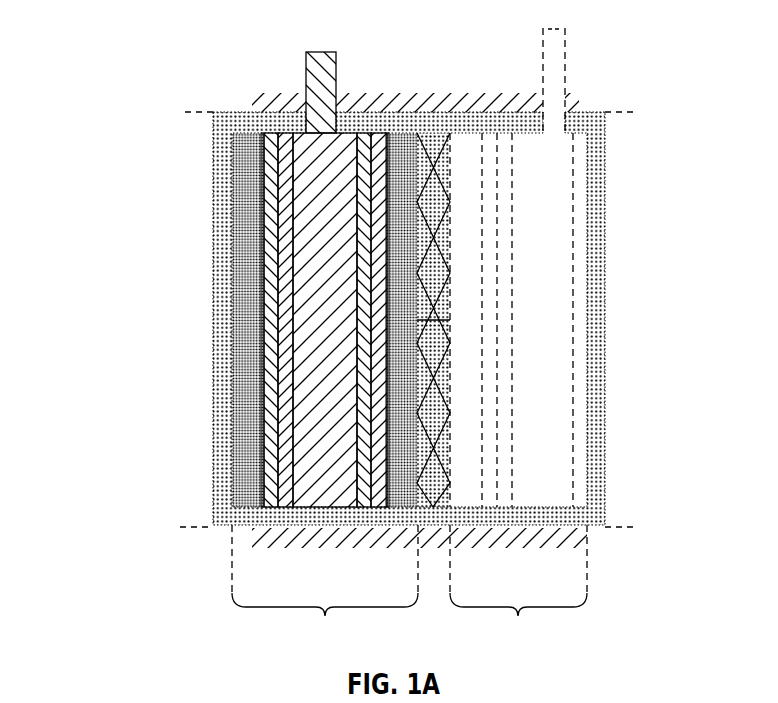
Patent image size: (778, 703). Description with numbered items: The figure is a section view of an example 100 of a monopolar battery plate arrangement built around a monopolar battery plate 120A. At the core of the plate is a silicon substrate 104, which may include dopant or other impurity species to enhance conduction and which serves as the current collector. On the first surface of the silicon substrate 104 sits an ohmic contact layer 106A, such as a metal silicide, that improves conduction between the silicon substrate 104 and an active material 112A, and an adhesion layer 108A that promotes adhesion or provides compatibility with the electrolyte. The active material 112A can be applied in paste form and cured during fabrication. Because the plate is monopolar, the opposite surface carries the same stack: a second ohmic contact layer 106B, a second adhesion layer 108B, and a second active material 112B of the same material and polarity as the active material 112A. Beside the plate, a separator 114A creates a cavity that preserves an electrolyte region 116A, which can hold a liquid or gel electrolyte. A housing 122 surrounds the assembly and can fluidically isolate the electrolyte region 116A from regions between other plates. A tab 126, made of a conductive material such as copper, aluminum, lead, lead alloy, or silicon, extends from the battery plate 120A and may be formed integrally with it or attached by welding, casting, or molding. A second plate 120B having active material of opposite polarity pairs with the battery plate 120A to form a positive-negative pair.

The example 100 is at (356, 328).
The silicon substrate 104 is at (315, 282).
The ohmic contact layer 106A is at (363, 220).
The second ohmic contact layer 106B is at (290, 332).
The adhesion layer 108A is at (387, 150).
The second adhesion layer 108B is at (268, 397).
The active material 112A is at (404, 142).
The second active material 112B is at (253, 476).
The separator 114A is at (447, 152).
The electrolyte region 116A is at (447, 221).
The monopolar battery plate 120A is at (325, 587).
The second plate 120B is at (518, 587).
The housing 122 is at (567, 108).
The tab 126 is at (306, 92).